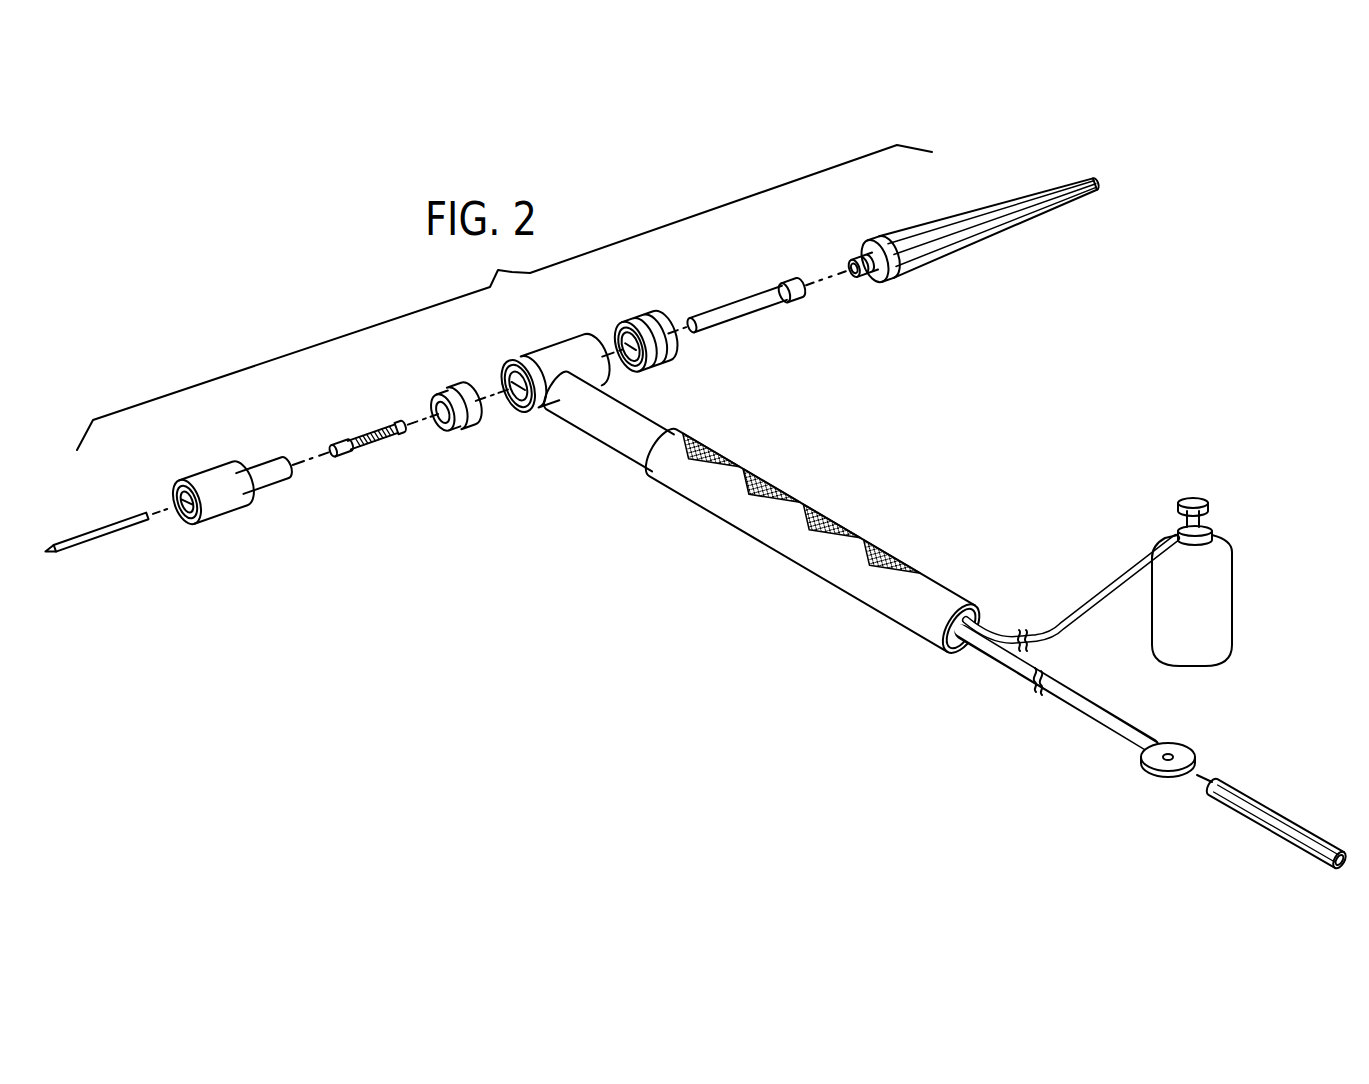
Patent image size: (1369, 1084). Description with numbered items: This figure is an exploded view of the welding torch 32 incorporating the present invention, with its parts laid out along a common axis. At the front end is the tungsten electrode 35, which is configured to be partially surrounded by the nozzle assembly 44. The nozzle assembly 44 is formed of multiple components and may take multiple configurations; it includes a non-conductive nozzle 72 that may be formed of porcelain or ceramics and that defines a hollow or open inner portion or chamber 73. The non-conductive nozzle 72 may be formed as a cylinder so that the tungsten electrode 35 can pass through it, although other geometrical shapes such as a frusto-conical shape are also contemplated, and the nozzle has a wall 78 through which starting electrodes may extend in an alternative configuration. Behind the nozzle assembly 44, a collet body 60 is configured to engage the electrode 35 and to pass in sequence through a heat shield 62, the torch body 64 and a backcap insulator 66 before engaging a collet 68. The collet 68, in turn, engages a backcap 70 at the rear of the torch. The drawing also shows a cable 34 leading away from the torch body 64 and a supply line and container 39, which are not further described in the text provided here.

The welding torch 32 is at (1020, 430).
The electrical cable 34 is at (1093, 705).
The tungsten electrode 35 is at (97, 540).
The fluid supply bottle and tubing 39 is at (1222, 613).
The nozzle assembly 44 is at (238, 523).
The collet body 60 is at (365, 432).
The heat shield 62 is at (458, 387).
The torch body 64 is at (546, 338).
The backcap insulator 66 is at (642, 318).
The collet 68 is at (737, 300).
The backcap 70 is at (912, 232).
The non-conductive nozzle 72 is at (183, 527).
The inner chamber 73 is at (178, 498).
The wall of the nozzle 78 is at (1287, 813).